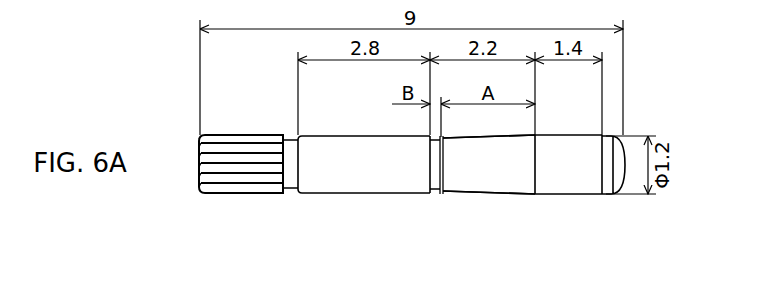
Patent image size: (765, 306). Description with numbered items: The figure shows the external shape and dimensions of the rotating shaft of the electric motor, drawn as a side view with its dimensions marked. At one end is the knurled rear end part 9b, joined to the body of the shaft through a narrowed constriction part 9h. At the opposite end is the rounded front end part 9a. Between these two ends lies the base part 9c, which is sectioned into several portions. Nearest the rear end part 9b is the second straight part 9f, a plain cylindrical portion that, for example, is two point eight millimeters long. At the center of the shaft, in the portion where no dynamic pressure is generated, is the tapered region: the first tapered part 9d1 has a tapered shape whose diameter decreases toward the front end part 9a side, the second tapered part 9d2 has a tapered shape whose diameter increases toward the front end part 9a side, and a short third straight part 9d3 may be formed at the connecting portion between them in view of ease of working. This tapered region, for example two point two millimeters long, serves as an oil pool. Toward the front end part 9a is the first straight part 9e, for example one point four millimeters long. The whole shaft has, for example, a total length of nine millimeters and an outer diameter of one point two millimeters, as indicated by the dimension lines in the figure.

The front end part 9a is at (623, 175).
The rear end part 9b is at (200, 173).
The base part 9c is at (601, 236).
The first tapered part 9d1 is at (436, 193).
The second tapered part 9d2 is at (488, 175).
The third straight part 9d3 is at (441, 193).
The first straight part 9e is at (373, 172).
The second straight part 9f is at (563, 175).
The constriction part 9h is at (290, 178).